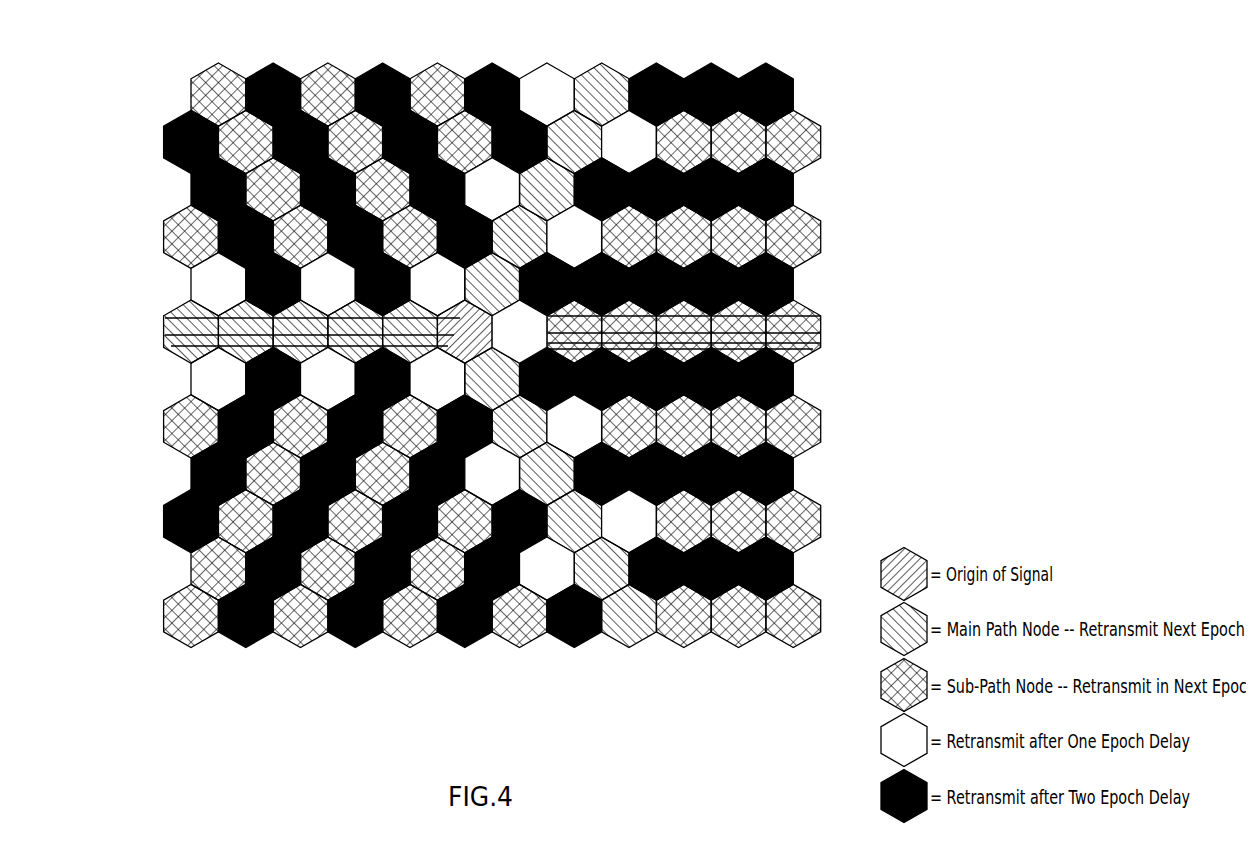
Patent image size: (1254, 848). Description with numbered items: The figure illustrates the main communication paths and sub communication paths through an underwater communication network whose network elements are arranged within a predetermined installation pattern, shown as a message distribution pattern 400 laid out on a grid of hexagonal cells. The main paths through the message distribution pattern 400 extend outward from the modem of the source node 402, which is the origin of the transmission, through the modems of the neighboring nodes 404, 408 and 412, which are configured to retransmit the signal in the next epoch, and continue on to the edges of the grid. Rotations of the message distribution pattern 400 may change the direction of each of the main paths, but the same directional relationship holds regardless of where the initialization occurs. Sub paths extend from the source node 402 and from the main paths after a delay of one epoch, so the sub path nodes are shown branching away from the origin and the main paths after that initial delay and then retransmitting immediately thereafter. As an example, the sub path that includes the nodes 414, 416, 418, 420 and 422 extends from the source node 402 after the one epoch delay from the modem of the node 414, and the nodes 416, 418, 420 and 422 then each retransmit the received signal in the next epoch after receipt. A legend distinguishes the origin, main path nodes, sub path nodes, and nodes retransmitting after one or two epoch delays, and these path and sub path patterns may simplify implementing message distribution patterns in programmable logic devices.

The message distribution pattern 400 is at (89, 92).
The source node 402 is at (157, 310).
The node 404 is at (512, 307).
The node 408 is at (157, 327).
The node 412 is at (163, 338).
The node 414 is at (500, 293).
The node 416 is at (805, 342).
The node 418 is at (812, 330).
The node 420 is at (812, 313).
The node 422 is at (812, 307).